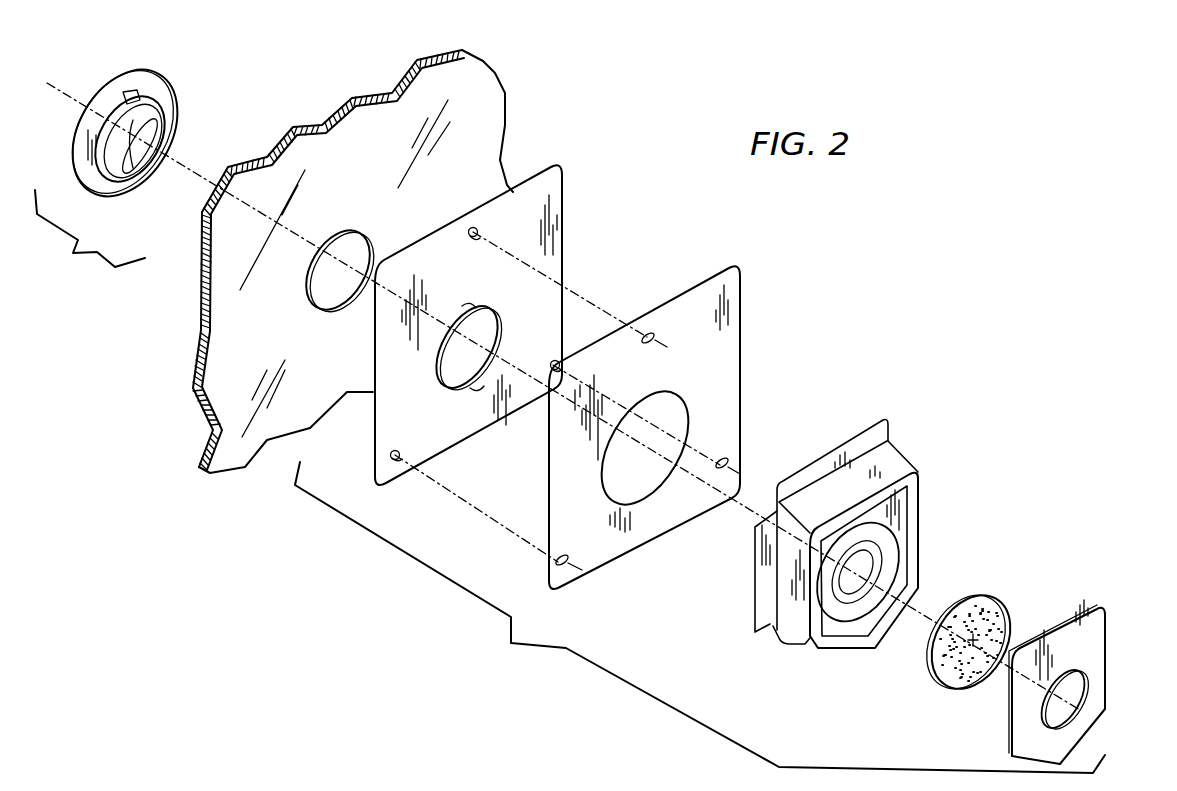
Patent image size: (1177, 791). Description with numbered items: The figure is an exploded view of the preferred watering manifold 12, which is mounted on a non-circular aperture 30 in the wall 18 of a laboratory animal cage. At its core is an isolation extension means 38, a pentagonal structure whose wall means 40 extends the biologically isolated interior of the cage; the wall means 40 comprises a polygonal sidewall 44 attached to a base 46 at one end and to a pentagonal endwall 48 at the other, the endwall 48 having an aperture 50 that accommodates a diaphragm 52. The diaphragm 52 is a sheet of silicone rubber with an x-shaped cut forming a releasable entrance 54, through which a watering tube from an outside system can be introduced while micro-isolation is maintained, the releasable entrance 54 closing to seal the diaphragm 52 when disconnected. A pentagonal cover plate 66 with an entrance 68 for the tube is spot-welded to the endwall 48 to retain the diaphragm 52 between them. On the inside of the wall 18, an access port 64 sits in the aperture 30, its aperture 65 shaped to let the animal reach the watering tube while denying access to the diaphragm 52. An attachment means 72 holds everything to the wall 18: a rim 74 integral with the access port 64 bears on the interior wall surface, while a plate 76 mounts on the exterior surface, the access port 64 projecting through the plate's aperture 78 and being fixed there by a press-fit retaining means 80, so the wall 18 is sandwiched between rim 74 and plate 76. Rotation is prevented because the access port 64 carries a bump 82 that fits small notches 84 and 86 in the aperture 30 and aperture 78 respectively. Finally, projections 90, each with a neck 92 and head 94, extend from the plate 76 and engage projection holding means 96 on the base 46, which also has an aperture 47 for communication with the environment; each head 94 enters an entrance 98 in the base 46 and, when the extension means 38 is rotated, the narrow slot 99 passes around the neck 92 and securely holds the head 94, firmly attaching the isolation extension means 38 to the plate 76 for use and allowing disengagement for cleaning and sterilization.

The watering manifold 12 is at (570, 481).
The wall 18 is at (503, 93).
The aperture 30 is at (337, 268).
The isolation extension means 38 is at (848, 552).
The wall means 40 is at (925, 545).
The sidewall 44 is at (858, 470).
The base 46 is at (744, 342).
The aperture 47 is at (668, 398).
The endwall 48 is at (840, 628).
The aperture 50 is at (860, 536).
The diaphragm 52 is at (975, 663).
The releasable entrance 54 is at (980, 637).
The access port 64 is at (130, 195).
The aperture 65 is at (148, 125).
The cover plate 66 is at (1100, 635).
The entrance 68 is at (1095, 700).
The attachment means 72 is at (278, 179).
The rim 74 is at (112, 102).
The plate 76 is at (563, 200).
The aperture 78 is at (497, 330).
The retaining means 80 is at (478, 386).
The bump 82 is at (130, 90).
The notch 84 is at (342, 236).
The notch 86 is at (468, 308).
The projection 90 is at (464, 331).
The neck 92 is at (470, 230).
The head 94 is at (474, 239).
The projection holding means 96 is at (645, 455).
The entrance 98 is at (646, 344).
The narrow slot 99 is at (652, 331).